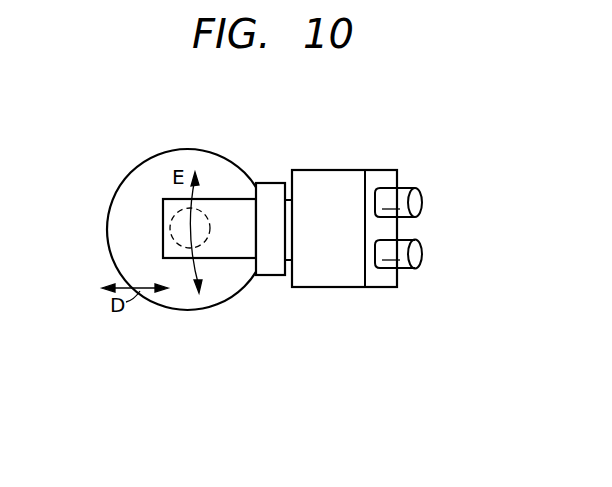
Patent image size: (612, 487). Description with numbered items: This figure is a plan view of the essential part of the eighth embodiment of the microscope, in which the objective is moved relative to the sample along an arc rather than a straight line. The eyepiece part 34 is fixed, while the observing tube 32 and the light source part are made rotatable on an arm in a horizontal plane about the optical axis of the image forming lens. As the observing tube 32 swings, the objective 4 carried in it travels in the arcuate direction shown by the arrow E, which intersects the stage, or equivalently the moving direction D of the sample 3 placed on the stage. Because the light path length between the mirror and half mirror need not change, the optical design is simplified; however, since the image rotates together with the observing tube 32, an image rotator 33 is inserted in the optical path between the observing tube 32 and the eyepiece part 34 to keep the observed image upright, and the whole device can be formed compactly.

The sample 3 is at (190, 149).
The infinity objective 4 is at (172, 226).
The observing tube 32 is at (233, 200).
The image rotator 33 is at (267, 272).
The eyepiece part 34 is at (335, 170).